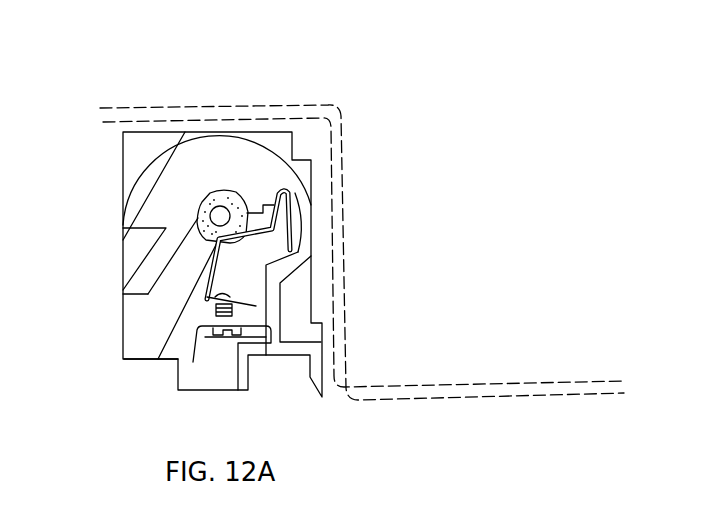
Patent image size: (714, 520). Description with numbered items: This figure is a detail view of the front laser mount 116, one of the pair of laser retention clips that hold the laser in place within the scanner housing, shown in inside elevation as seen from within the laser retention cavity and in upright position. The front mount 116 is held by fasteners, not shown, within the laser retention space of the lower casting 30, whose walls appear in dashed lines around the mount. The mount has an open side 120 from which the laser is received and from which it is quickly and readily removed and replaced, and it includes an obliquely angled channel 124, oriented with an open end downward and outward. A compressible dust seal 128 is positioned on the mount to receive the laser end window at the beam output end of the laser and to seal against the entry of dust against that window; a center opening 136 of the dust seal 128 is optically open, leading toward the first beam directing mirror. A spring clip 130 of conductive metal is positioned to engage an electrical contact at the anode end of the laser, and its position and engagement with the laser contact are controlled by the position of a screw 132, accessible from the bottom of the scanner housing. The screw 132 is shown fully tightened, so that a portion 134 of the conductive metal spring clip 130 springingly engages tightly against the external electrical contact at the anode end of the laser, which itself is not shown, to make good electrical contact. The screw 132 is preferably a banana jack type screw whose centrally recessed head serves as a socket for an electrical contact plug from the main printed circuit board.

The lower casting 30 is at (461, 411).
The front laser mount 116 is at (141, 365).
The open side 120 is at (120, 283).
The obliquely angled channel 124 is at (177, 267).
The compressible dust seal 128 is at (278, 190).
The spring clip 130 is at (284, 252).
The screw 132 is at (222, 338).
The portion of the spring clip 134 is at (247, 238).
The center opening 136 is at (221, 214).